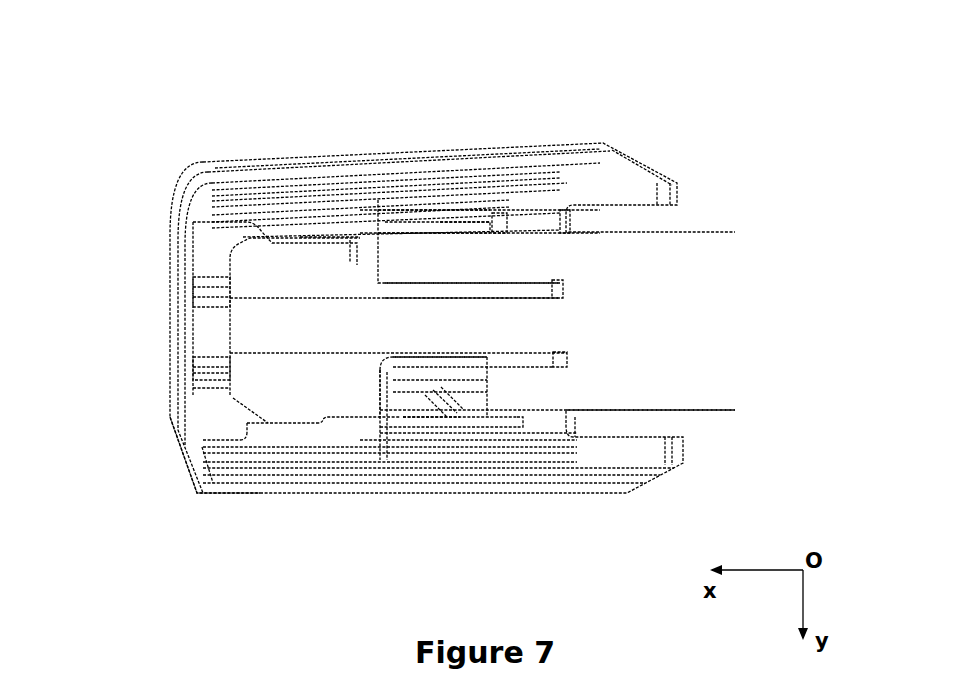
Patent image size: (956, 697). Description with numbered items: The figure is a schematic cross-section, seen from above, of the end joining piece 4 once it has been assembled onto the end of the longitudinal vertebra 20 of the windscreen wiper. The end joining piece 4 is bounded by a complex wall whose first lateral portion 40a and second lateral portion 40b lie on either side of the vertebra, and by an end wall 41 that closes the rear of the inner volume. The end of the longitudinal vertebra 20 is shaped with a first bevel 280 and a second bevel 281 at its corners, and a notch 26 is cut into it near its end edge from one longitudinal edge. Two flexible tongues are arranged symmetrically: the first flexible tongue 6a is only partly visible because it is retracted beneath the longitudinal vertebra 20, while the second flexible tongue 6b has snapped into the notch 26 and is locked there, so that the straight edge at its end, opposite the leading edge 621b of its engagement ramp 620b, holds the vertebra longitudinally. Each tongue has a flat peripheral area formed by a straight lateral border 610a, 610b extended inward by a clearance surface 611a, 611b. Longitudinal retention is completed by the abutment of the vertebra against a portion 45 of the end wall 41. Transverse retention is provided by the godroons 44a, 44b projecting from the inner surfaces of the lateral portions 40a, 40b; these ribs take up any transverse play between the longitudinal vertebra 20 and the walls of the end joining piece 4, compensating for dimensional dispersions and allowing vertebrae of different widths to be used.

The longitudinal vertebra 20 is at (715, 275).
The end joining piece 4 is at (200, 523).
The second bevel 281 is at (250, 258).
The first lateral portion 40a is at (333, 175).
The godroons 44a is at (313, 240).
The clearance surface 611a is at (390, 232).
The first flexible tongue 6a is at (428, 227).
The straight lateral border 610a is at (450, 225).
The notch 26 is at (440, 353).
The end wall 41 is at (177, 305).
The portion of the end wall 45 is at (210, 367).
The engagement ramp 620b is at (420, 407).
The first bevel 280 is at (257, 407).
The second lateral portion 40b is at (312, 483).
The godroons 44b is at (320, 420).
The clearance surface 611b is at (393, 423).
The straight lateral border 610b is at (428, 423).
The second flexible tongue 6b is at (458, 433).
The leading edge 621b is at (467, 400).